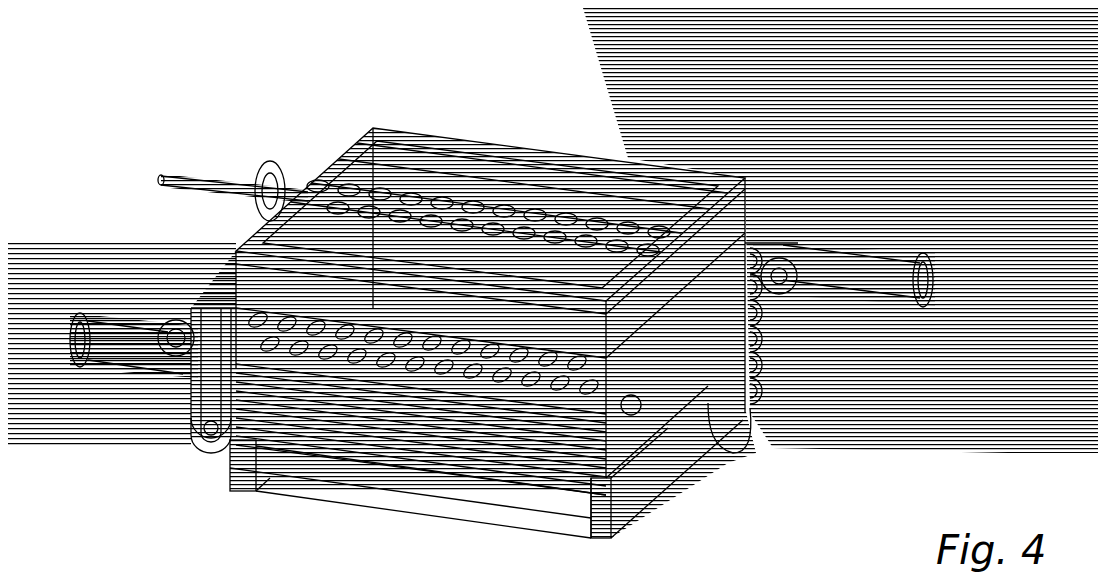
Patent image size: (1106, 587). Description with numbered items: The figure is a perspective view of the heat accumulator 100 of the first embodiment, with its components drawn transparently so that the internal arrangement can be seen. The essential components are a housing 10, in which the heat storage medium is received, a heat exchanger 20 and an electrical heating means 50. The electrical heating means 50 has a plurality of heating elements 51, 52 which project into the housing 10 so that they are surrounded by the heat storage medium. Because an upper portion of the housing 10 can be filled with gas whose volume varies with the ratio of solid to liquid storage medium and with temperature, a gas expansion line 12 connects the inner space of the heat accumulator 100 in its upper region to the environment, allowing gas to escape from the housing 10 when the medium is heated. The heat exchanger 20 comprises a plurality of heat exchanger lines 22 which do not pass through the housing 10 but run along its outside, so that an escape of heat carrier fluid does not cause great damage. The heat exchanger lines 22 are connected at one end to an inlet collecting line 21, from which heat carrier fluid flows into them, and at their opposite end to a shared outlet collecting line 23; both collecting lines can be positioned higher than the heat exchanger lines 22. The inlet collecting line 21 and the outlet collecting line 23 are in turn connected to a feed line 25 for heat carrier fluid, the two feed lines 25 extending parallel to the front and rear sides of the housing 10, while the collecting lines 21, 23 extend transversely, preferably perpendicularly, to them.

The heat accumulator 100 is at (974, 128).
The housing 10 is at (748, 198).
The gas expansion line 12 is at (187, 168).
The heat exchanger 20 is at (780, 352).
The inlet collecting line 21 is at (202, 287).
The heat exchanger lines 22 is at (197, 442).
The outlet collecting line 23 is at (768, 292).
The feed line 25 is at (874, 243).
The electrical heating means 50 is at (552, 207).
The heating element 51 is at (416, 185).
The heating element 52 is at (450, 173).